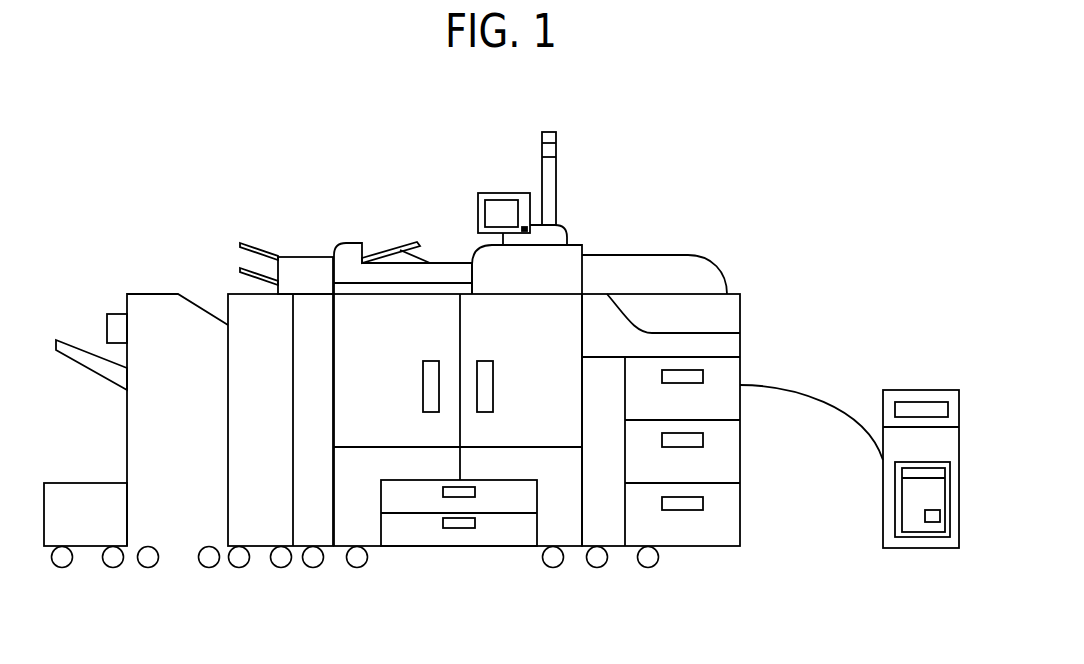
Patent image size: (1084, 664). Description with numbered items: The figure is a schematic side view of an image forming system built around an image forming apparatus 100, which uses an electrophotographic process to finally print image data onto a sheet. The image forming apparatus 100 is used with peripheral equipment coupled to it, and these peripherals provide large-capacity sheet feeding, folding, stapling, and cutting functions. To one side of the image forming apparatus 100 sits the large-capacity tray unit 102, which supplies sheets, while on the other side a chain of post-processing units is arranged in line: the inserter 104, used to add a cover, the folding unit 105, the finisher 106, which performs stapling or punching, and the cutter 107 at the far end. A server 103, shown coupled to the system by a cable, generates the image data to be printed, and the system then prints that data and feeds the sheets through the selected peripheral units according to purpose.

The image forming apparatus 100 is at (582, 236).
The large-capacity tray unit 102 is at (695, 246).
The server 103 is at (925, 381).
The inserter 104 is at (301, 248).
The folding unit 105 is at (225, 284).
The finisher 106 is at (143, 284).
The cutter 107 is at (69, 474).